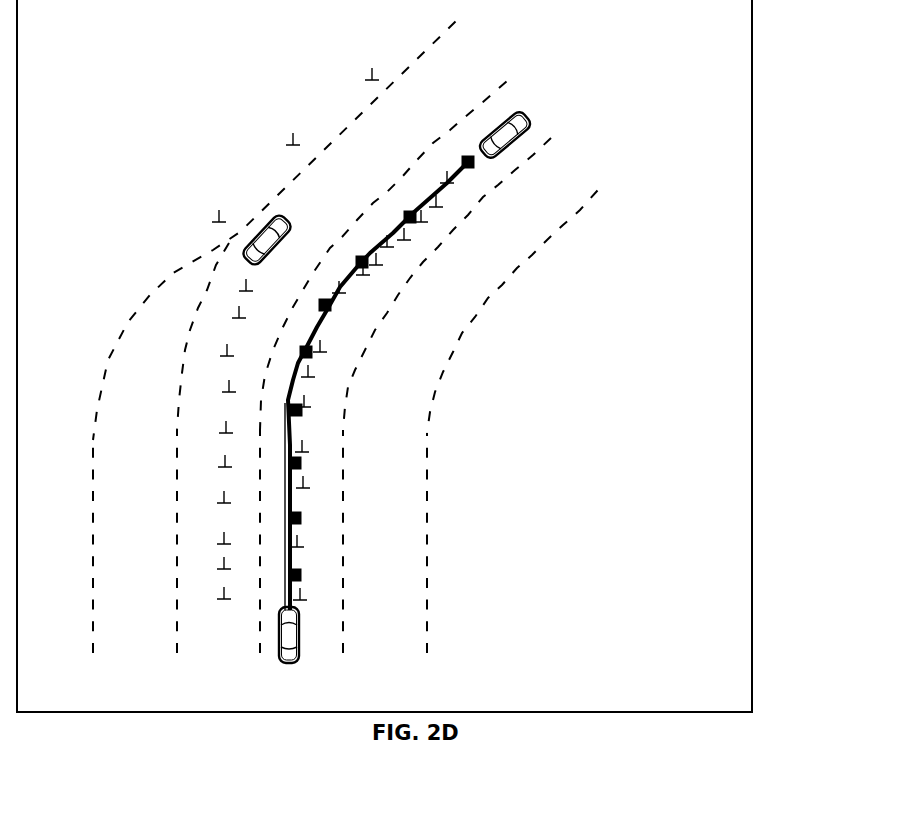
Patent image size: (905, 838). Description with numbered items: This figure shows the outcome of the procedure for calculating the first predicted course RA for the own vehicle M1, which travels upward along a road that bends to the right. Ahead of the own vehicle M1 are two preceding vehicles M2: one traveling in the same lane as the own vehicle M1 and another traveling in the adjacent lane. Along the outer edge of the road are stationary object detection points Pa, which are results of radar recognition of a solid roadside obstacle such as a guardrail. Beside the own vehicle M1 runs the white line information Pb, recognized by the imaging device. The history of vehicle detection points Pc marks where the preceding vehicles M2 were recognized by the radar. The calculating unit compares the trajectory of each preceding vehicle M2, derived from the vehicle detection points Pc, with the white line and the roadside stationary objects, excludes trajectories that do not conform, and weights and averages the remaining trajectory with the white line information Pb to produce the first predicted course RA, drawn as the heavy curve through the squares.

The own vehicle M1 is at (280, 650).
The preceding vehicle M2 is at (285, 220).
The first predicted course RA is at (318, 327).
The stationary object detection points Pa is at (293, 137).
The white line information Pb is at (287, 444).
The vehicle detection points Pc is at (395, 240).